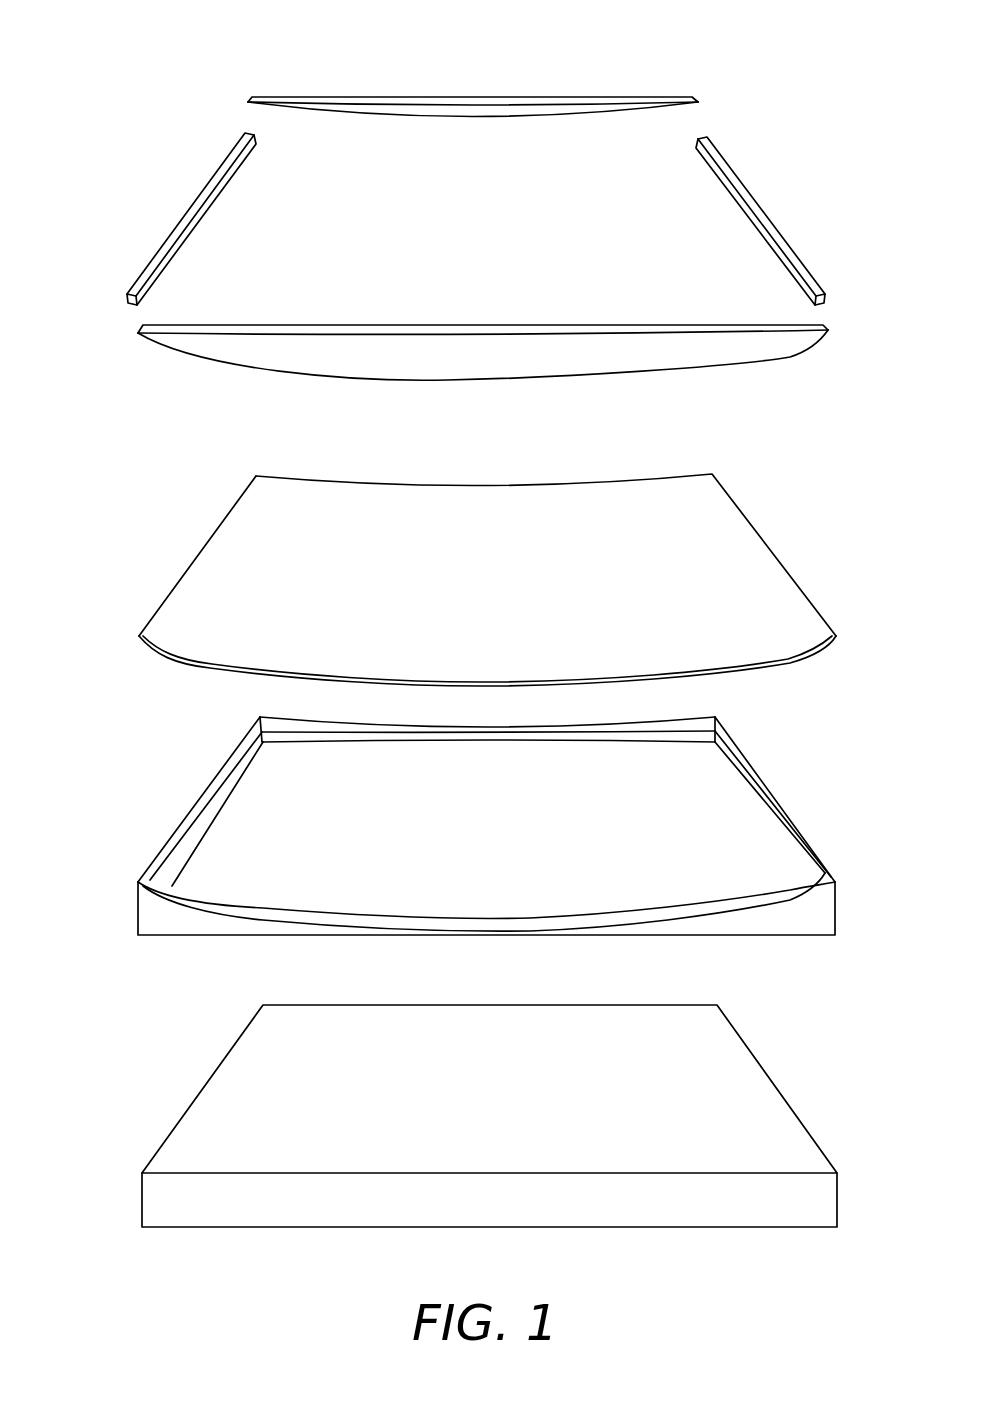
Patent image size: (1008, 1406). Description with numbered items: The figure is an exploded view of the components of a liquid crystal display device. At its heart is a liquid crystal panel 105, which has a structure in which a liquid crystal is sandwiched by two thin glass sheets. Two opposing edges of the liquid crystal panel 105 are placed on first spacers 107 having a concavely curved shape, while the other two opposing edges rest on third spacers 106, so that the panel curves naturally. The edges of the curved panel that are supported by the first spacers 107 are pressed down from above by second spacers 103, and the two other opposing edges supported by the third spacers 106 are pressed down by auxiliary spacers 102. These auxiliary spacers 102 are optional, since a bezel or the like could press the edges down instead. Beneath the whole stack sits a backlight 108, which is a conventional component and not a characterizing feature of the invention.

The auxiliary spacer 102 is at (165, 235).
The second spacer 103 is at (446, 103).
The liquid crystal panel 105 is at (506, 505).
The third spacer 106 is at (186, 847).
The first spacer 107 is at (215, 915).
The backlight 108 is at (223, 1133).